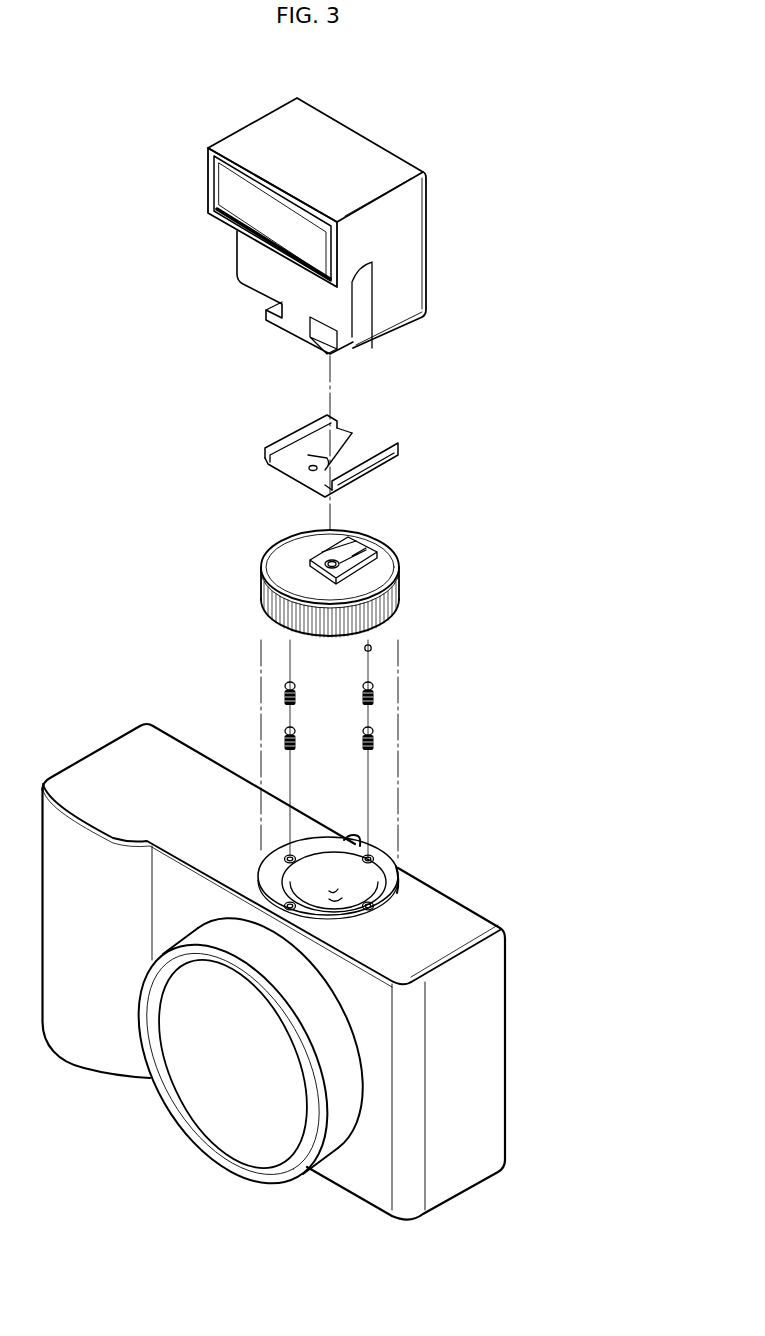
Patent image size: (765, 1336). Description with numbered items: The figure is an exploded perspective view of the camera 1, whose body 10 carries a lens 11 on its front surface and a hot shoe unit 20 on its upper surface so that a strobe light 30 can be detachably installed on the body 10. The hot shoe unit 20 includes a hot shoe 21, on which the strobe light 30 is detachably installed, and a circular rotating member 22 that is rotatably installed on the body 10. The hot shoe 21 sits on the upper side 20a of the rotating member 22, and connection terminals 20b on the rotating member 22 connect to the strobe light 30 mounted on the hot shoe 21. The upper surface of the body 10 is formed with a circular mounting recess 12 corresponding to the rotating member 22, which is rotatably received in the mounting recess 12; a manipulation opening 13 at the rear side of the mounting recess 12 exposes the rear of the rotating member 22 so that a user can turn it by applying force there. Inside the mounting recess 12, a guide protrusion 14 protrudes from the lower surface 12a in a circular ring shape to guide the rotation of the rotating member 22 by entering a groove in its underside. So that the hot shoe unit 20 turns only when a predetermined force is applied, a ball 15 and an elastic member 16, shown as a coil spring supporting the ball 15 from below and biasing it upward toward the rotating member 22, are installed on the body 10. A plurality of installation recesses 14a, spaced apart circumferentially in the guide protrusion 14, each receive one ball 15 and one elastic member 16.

The camera 1 is at (100, 152).
The body 10 is at (538, 1004).
The lens 11 is at (237, 1108).
The mounting recess 12 is at (335, 890).
The lower surface of the mounting recess 12a is at (335, 901).
The manipulation opening 13 is at (362, 842).
The guide protrusion 14 is at (325, 834).
The installation recesses 14a is at (290, 858).
The ball 15 is at (372, 648).
The elastic member 16 is at (377, 692).
The hot shoe unit 20 is at (428, 561).
The upper side of the rotating member 20a is at (285, 566).
The connection terminals 20b is at (358, 541).
The hot shoe 21 is at (397, 455).
The rotating member 22 is at (400, 590).
The strobe light 30 is at (456, 233).